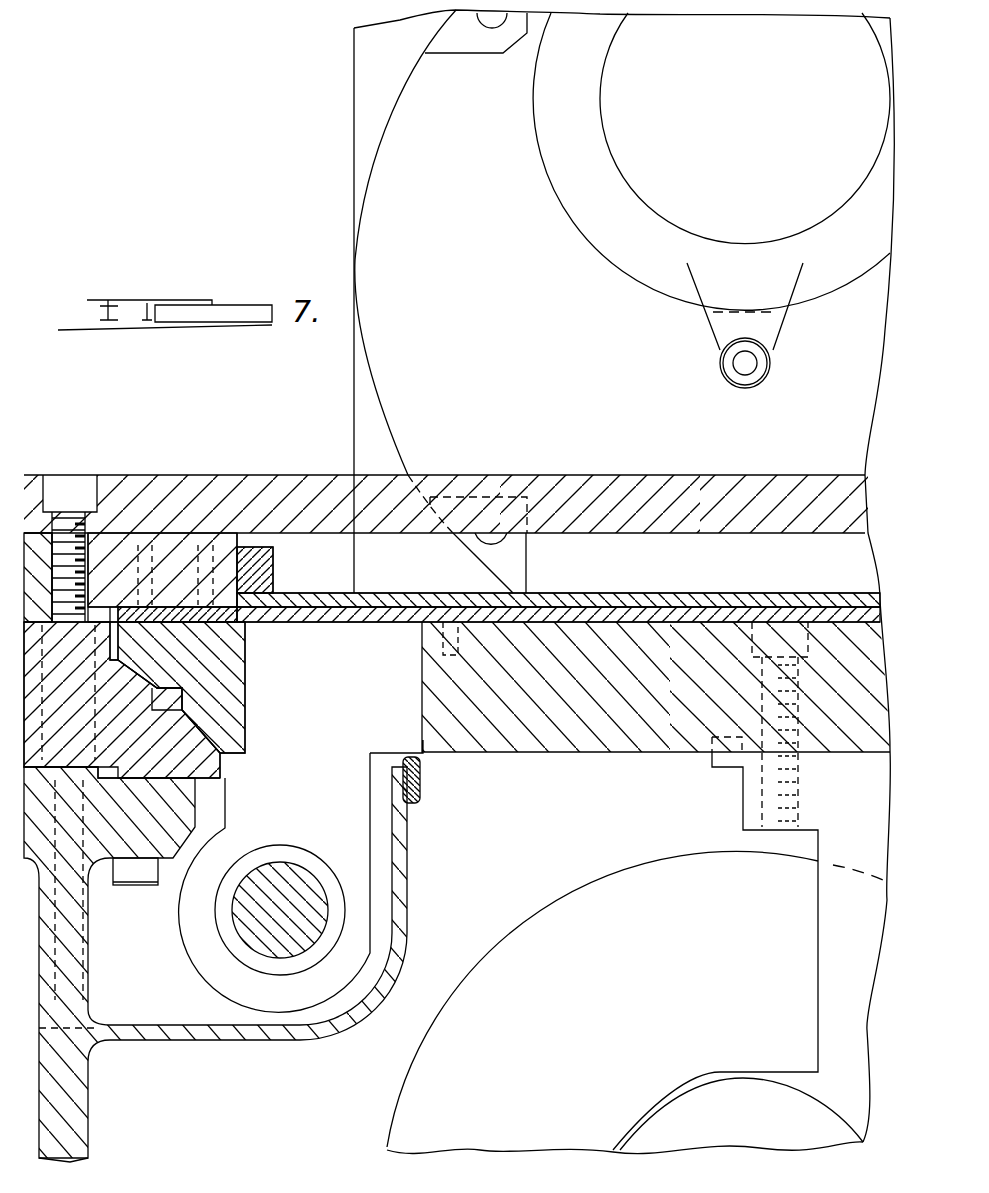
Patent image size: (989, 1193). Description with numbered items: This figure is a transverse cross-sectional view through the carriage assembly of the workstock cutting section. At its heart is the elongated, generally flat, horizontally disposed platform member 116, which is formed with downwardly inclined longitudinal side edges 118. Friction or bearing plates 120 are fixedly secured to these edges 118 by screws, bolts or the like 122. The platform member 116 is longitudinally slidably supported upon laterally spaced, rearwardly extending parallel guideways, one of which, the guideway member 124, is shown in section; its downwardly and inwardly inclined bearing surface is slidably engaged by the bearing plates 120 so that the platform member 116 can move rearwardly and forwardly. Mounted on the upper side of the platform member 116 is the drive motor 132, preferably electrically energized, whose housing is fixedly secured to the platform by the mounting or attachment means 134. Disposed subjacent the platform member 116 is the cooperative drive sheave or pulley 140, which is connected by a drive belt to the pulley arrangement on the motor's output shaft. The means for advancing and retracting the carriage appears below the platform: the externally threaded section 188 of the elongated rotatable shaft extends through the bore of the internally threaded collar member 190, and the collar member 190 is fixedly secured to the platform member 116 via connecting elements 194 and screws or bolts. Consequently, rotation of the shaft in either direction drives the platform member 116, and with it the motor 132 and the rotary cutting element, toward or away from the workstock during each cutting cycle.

The platform member 116 is at (664, 764).
The longitudinal side edges 118 is at (181, 687).
The bearing plates 120 is at (143, 713).
The screws, bolts or the like 122 is at (170, 611).
The guideway member 124 is at (103, 618).
The drive motor 132 is at (344, 143).
The mounting or attachment means 134 is at (513, 562).
The drive sheave or pulley 140 is at (438, 1068).
The externally threaded section 188 is at (313, 897).
The internally threaded collar member 190 is at (357, 945).
The connecting elements 194 is at (400, 727).